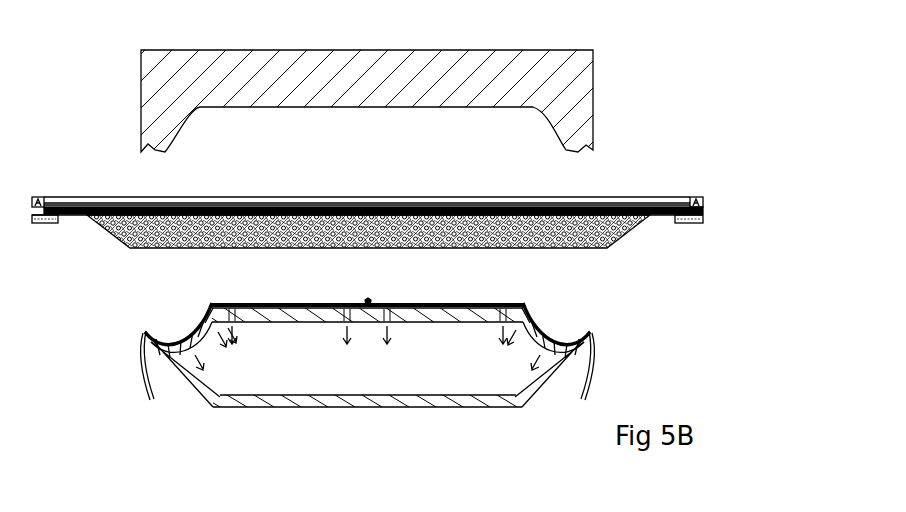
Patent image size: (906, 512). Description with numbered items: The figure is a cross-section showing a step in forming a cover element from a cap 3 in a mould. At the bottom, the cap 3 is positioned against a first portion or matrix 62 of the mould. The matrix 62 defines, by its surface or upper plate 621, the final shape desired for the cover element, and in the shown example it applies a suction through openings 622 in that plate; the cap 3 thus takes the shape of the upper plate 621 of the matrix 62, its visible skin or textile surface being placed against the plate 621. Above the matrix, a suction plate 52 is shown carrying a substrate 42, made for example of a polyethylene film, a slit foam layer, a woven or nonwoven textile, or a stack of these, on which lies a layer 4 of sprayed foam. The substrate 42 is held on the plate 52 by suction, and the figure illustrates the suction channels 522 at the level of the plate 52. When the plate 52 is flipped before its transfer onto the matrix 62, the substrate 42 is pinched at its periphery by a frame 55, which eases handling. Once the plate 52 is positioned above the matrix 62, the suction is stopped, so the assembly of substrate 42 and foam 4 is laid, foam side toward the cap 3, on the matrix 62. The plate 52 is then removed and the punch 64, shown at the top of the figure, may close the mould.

The punch 64 is at (593, 70).
The layer of sprayed foam 4 is at (406, 213).
The suction plate 52 is at (397, 178).
The suction channels 522 is at (570, 202).
The frame 55 is at (700, 222).
The substrate 42 is at (655, 218).
The matrix 62 is at (377, 377).
The upper plate 621 is at (445, 320).
The openings 622 is at (336, 323).
The cap 3 is at (540, 328).